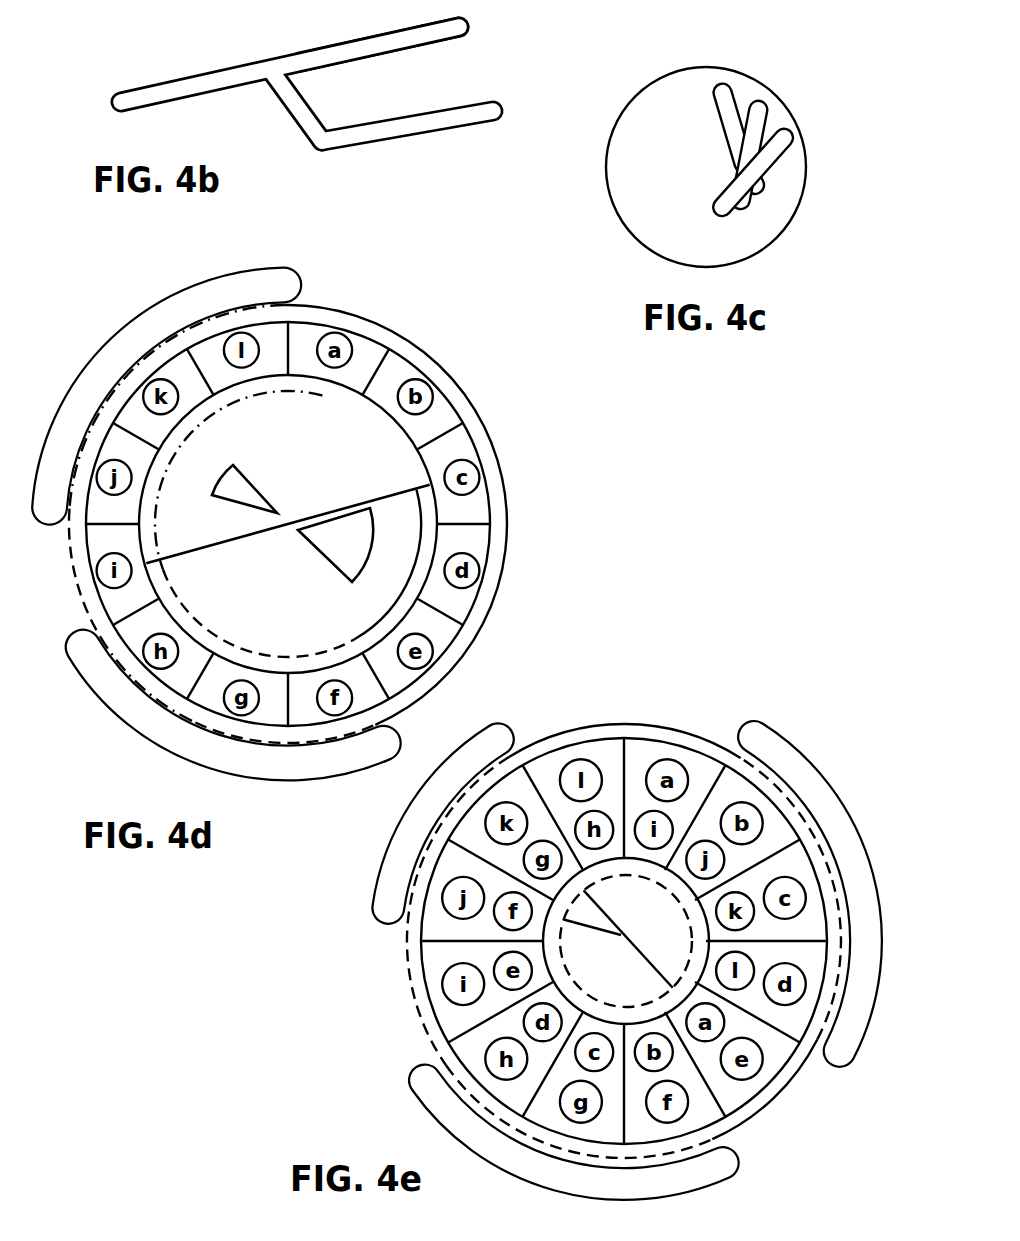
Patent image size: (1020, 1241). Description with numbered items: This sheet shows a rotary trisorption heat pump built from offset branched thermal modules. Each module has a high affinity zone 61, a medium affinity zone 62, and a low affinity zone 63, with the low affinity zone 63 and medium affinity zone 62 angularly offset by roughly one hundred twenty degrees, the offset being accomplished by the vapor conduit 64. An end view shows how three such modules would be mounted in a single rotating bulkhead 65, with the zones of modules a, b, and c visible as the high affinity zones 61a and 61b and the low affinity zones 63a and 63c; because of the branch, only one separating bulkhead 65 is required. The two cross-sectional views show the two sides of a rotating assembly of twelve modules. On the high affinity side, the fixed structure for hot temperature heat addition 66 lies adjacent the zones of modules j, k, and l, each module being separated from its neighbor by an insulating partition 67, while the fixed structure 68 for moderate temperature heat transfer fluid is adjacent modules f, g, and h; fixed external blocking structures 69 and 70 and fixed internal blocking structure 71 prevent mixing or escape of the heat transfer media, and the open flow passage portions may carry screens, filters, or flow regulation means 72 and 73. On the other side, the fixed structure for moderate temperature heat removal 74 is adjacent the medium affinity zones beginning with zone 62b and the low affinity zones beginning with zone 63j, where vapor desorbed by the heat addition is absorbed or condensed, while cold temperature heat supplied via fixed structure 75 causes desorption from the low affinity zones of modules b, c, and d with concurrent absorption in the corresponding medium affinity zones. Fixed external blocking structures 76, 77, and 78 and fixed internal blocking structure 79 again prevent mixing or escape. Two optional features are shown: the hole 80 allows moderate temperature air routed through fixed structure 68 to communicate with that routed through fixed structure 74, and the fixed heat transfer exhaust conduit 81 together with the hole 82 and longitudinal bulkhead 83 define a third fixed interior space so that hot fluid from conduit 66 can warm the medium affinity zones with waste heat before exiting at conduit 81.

In FIG. 4B, the high affinity zone 61 is at (124, 92).
In FIG. 4B, the medium affinity zone 62 is at (438, 19).
In FIG. 4B, the low affinity zone 63 is at (480, 101).
In FIG. 4B, the vapor conduit 64 is at (296, 118).
In FIG. 4C, the high affinity zone of thermal module a 61a is at (715, 78).
In FIG. 4C, the high affinity zone of thermal module b 61b is at (768, 97).
In FIG. 4C, the low affinity zone of thermal module a 63a is at (766, 196).
In FIG. 4C, the low affinity zone of thermal module c 63c is at (713, 203).
In FIG. 4C, the rotating bulkhead 65 is at (629, 232).
In FIG. 4D, the rotating bulkhead 65 is at (378, 340).
In FIG. 4D, the fixed structure for hot temperature heat addition 66 is at (210, 282).
In FIG. 4D, the insulating partition 67 is at (294, 338).
In FIG. 4E, the insulating partition 67 is at (628, 748).
In FIG. 4D, the fixed structure for moderate temperature heat transfer fluid 68 is at (228, 782).
In FIG. 4D, the fixed external blocking structure 69 is at (84, 640).
In FIG. 4D, the fixed external blocking structure 70 is at (462, 384).
In FIG. 4D, the fixed internal blocking structure 71 is at (360, 503).
In FIG. 4D, the screen, filter, or flow regulation means 72 is at (230, 644).
In FIG. 4D, the screen, filter, or flow regulation means 73 is at (188, 725).
In FIG. 4E, the fixed structure for moderate temperature heat removal 74 is at (770, 726).
In FIG. 4E, the fixed structure for cold temperature heat supply 75 is at (733, 1175).
In FIG. 4E, the fixed external blocking structure 76 is at (782, 1095).
In FIG. 4E, the fixed external blocking structure 77 is at (415, 1005).
In FIG. 4E, the fixed external blocking structure 78 is at (611, 725).
In FIG. 4E, the fixed internal blocking structure 79 is at (645, 880).
In FIG. 4D, the hole 80 is at (363, 569).
In FIG. 4E, the fixed heat transfer exhaust conduit 81 is at (510, 746).
In FIG. 4D, the hole 82 is at (262, 492).
In FIG. 4E, the longitudinal bulkhead 83 is at (613, 934).
In FIG. 4E, the medium affinity zone of thermal module b 62b is at (779, 789).
In FIG. 4E, the low affinity zone of thermal module j 63j is at (691, 892).